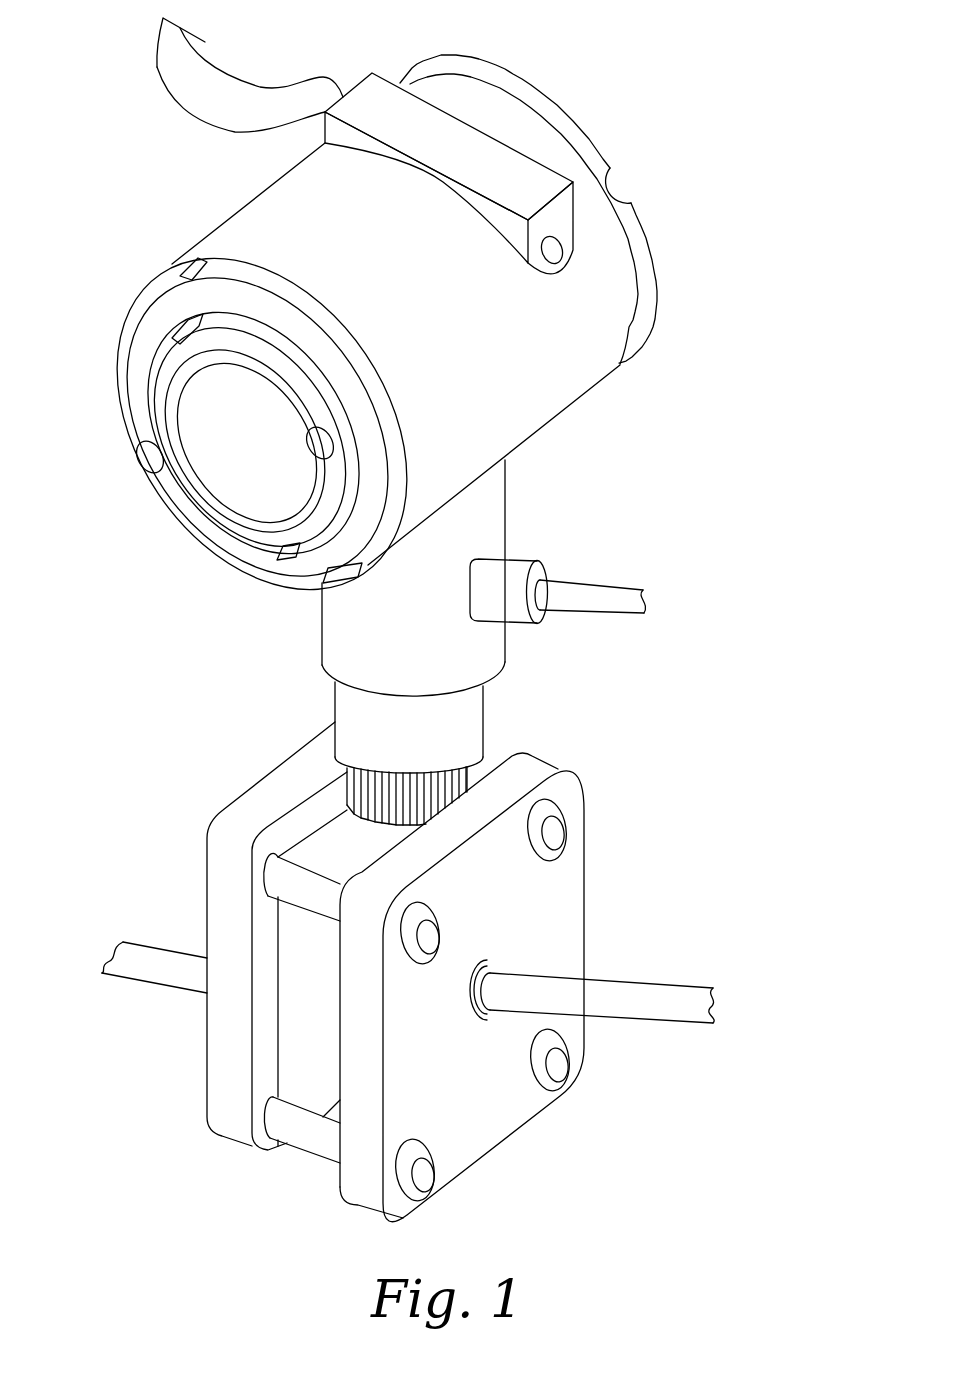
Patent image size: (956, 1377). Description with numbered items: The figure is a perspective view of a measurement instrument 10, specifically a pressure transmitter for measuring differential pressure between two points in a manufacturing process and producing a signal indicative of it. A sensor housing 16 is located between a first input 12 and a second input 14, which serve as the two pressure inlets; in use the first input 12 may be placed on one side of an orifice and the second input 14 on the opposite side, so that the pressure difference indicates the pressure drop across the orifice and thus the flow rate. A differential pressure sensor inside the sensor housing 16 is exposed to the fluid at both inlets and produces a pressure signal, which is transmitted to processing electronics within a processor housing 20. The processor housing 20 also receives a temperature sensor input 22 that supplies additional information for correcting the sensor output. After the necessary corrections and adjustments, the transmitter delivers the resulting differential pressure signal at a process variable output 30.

The measurement instrument 10 is at (665, 462).
The first input 12 is at (667, 1015).
The second input 14 is at (152, 955).
The sensor housing 16 is at (579, 795).
The processor housing 20 is at (185, 407).
The temperature sensor input 22 is at (648, 598).
The process variable output 30 is at (193, 90).